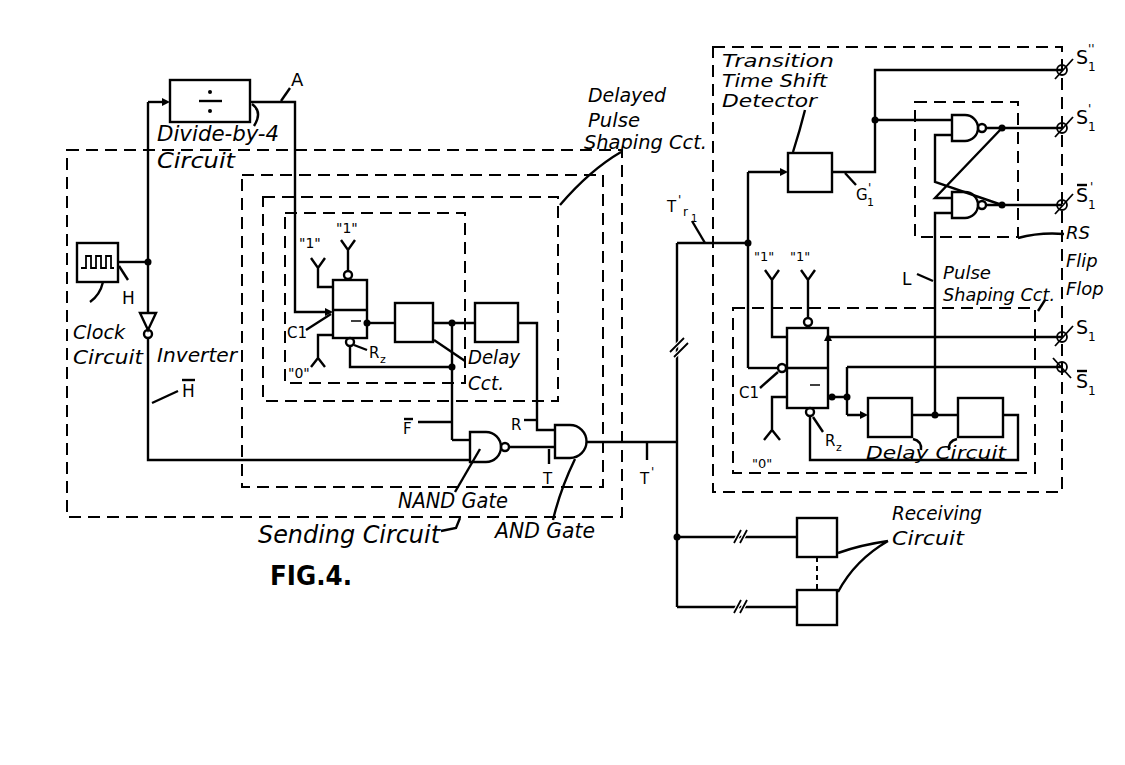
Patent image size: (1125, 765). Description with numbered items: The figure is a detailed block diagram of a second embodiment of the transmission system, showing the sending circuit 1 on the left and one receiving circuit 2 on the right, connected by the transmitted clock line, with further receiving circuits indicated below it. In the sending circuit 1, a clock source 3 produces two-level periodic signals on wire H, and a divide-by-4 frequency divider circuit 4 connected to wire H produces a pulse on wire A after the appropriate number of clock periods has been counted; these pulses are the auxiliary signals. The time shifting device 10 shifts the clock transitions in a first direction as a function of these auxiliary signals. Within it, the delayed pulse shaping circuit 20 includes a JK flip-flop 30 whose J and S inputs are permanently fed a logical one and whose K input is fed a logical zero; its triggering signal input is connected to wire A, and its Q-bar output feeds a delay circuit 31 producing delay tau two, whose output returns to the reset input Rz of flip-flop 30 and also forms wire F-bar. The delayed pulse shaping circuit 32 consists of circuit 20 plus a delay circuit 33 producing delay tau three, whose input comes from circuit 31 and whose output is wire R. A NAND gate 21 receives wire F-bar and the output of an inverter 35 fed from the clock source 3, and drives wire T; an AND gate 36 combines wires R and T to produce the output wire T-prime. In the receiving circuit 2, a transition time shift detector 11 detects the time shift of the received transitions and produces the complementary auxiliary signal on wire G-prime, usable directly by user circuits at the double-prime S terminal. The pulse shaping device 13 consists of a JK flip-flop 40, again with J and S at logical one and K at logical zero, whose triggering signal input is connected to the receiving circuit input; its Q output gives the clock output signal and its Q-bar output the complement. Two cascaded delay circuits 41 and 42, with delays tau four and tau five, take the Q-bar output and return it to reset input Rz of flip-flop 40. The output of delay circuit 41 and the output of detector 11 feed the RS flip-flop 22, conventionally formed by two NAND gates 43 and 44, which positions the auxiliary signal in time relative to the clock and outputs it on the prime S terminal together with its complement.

The sending circuit 1 is at (396, 144).
The receiving circuit 2 is at (1027, 28).
The clock source 3 is at (103, 243).
The divide-by-4 frequency divider circuit 4 is at (229, 80).
The time shifting device 10 is at (535, 160).
The transition time shift detector 11 is at (818, 152).
The pulse shaping device 13 is at (850, 306).
The delayed pulse shaping circuit 20 is at (466, 246).
The NAND gate 21 is at (484, 462).
The RS flip-flop 22 is at (983, 177).
The JK flip-flop 30 is at (367, 292).
The delay circuit 31 is at (412, 303).
The delayed pulse shaping circuit 32 is at (560, 292).
The delay circuit 33 is at (496, 303).
The inverter 35 is at (158, 322).
The AND gate 36 is at (580, 425).
The JK flip-flop 40 is at (828, 364).
The delay circuit 41 is at (895, 398).
The delay circuit 42 is at (987, 398).
The NAND gate 43 is at (960, 220).
The NAND gate 44 is at (975, 115).